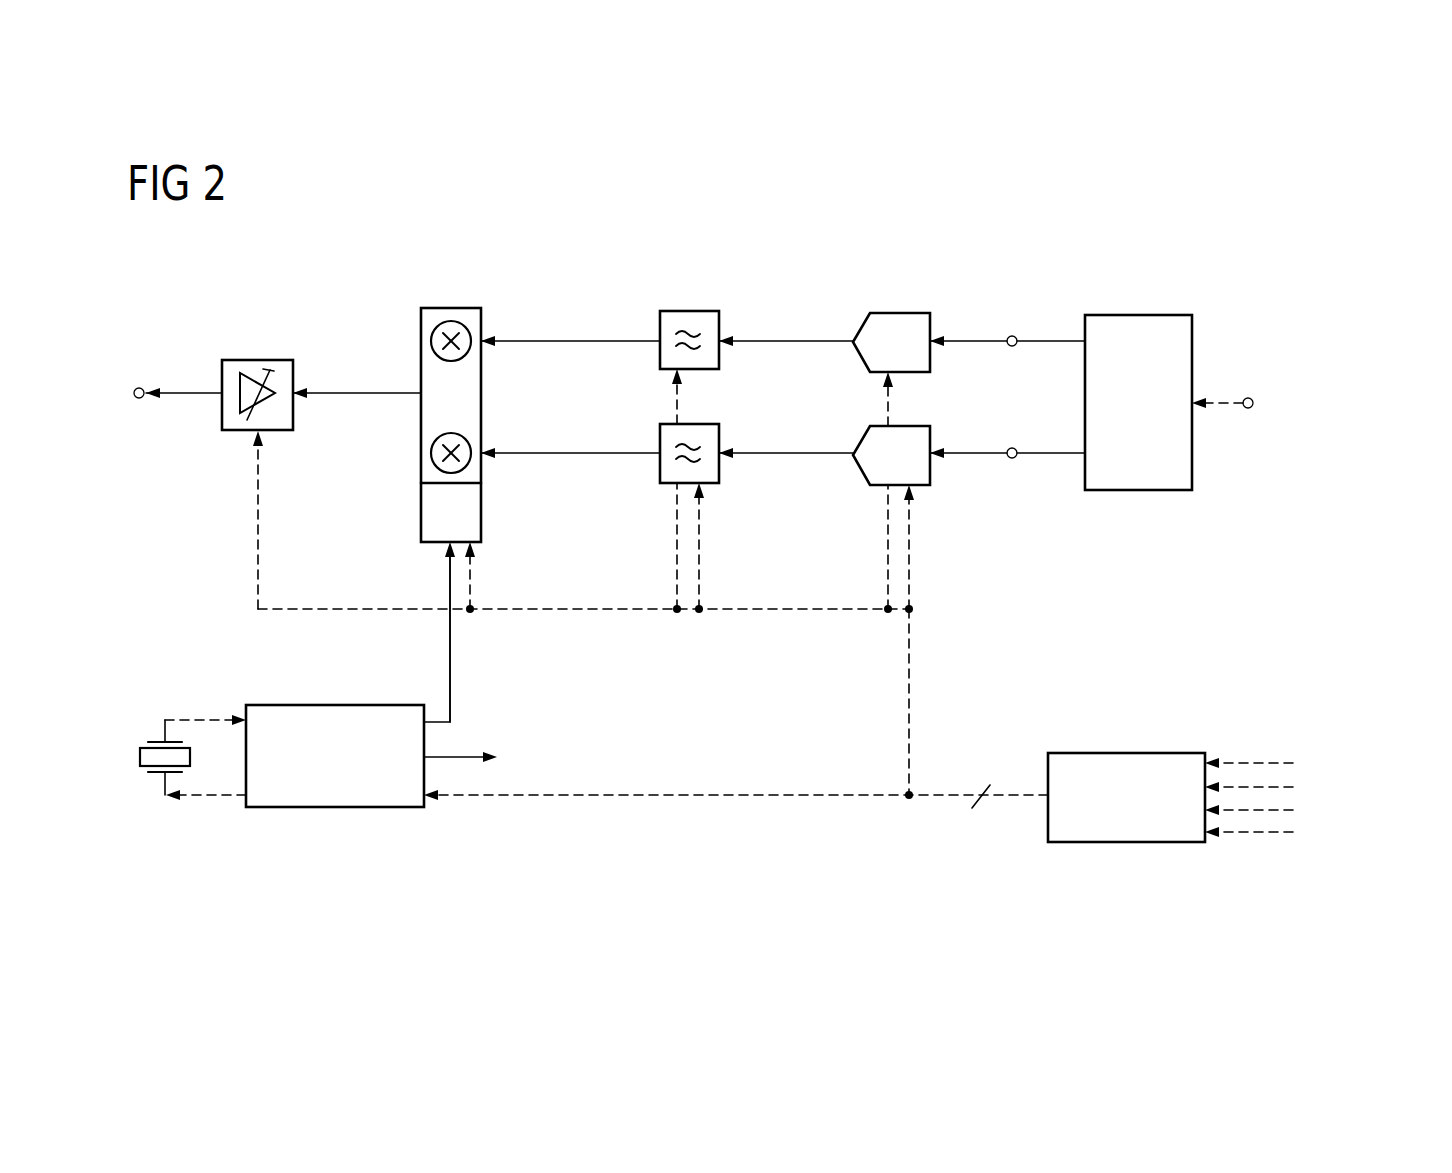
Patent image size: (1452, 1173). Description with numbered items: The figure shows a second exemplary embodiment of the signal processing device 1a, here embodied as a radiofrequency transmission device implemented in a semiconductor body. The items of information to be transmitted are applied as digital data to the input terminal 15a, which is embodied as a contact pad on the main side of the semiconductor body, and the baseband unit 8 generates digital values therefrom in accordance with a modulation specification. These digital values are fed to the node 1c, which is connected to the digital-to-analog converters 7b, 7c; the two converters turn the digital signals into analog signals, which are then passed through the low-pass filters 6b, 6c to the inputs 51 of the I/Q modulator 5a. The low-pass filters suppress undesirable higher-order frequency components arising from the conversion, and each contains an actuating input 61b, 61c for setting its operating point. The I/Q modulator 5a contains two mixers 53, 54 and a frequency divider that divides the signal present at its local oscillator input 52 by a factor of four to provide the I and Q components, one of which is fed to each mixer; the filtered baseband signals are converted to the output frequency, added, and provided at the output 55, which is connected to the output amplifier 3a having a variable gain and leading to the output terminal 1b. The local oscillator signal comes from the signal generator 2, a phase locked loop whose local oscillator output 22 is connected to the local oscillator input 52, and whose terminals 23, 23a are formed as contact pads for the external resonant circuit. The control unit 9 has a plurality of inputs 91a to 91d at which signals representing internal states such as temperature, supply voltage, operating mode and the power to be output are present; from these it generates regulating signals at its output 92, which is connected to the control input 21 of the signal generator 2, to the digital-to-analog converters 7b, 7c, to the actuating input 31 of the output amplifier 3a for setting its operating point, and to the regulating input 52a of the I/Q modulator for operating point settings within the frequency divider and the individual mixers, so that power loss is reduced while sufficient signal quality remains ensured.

The signal processing device 1a is at (346, 258).
The output terminal 1b is at (138, 386).
The node 1c is at (1011, 348).
The signal generator 2 is at (337, 808).
The output amplifier 3a is at (257, 359).
The actuating input of the output amplifier 31 is at (253, 434).
The I/Q modulator 5a is at (440, 308).
The inputs of the I/Q modulator 51 is at (484, 334).
The local oscillator input 52 is at (443, 545).
The regulating input of the I/Q modulator 52a is at (478, 545).
The mixer 53 is at (432, 453).
The mixer 54 is at (452, 318).
The output 55 is at (421, 393).
The low-pass filter 6b is at (690, 311).
The low-pass filter 6c is at (660, 465).
The actuating input 61b is at (673, 376).
The actuating input 61c is at (703, 492).
The digital-to-analog converter 7b is at (903, 313).
The digital-to-analog converter 7c is at (878, 487).
The baseband unit 8 is at (1137, 315).
The control unit 9 is at (1137, 753).
The input of the control unit 91a is at (1207, 762).
The input of the control unit 91d is at (1208, 838).
The output of the control unit 92 is at (1045, 802).
The input terminal 15a is at (1250, 398).
The control input 21 is at (429, 797).
The local oscillator output 22 is at (428, 720).
The terminal 23 is at (242, 718).
The terminal 23a is at (243, 798).